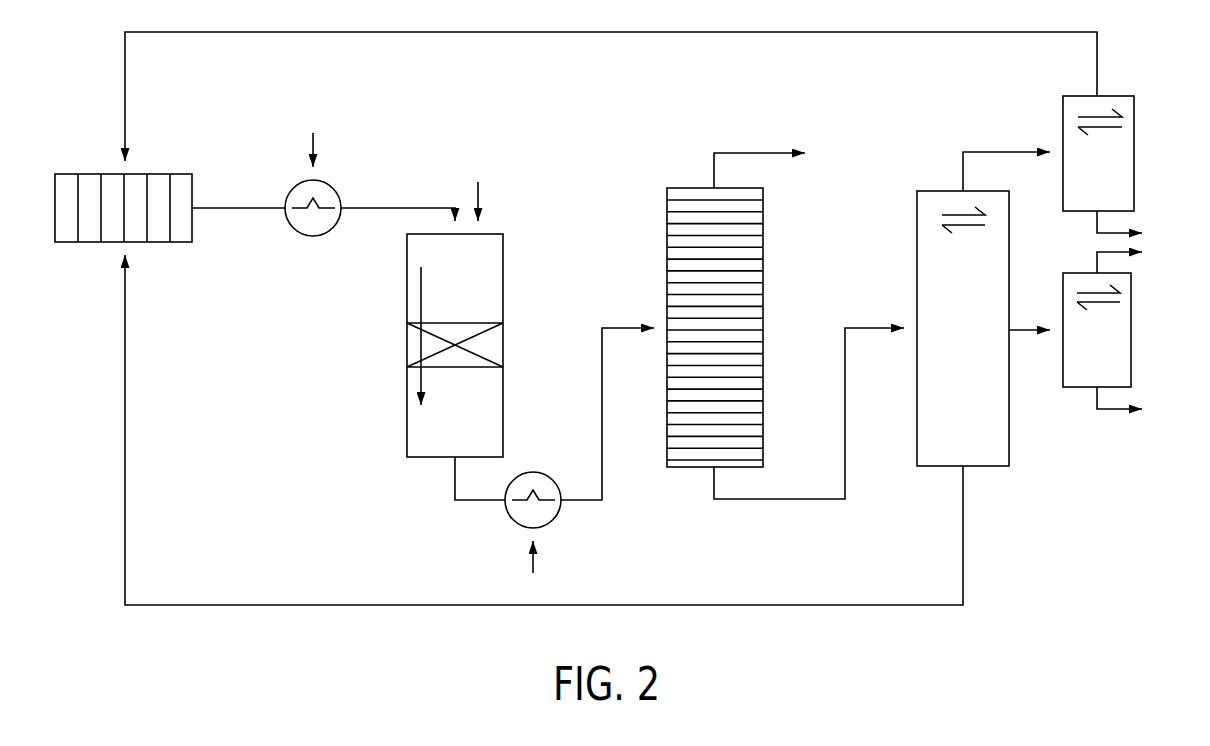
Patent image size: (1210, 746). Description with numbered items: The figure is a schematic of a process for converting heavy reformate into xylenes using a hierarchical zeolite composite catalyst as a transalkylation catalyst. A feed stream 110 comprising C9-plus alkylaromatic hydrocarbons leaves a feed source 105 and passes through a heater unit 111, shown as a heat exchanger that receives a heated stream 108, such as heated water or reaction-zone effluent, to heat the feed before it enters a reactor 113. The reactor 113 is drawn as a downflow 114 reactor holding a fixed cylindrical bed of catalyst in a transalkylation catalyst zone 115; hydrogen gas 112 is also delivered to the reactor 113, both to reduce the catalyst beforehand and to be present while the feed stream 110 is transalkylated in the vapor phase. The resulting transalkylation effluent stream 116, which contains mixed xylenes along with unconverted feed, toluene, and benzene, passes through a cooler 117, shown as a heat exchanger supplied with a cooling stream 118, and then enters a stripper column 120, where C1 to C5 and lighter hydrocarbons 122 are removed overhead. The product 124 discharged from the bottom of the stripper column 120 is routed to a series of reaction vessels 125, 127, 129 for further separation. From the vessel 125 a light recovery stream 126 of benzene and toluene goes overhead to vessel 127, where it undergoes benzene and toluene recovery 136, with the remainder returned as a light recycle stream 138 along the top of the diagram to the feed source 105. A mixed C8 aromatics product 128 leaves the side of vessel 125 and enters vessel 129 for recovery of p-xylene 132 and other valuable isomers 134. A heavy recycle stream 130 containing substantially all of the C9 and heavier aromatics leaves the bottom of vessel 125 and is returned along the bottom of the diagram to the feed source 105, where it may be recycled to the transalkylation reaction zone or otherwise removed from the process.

The feed source 105 is at (152, 173).
The heated stream 108 is at (310, 138).
The feed stream 110 is at (243, 210).
The heater unit 111 is at (340, 188).
The hydrogen gas 112 is at (480, 193).
The reactor 113 is at (394, 298).
The downflow 114 is at (421, 280).
The transalkylation catalyst zone 115 is at (503, 343).
The transalkylation effluent stream 116 is at (452, 480).
The cooler 117 is at (510, 518).
The cooling stream 118 is at (540, 563).
The stripper column 120 is at (763, 303).
The lighter hydrocarbons 122 is at (747, 152).
The product 124 is at (805, 499).
The reaction vessel 125 is at (995, 467).
The light recovery stream 126 is at (998, 152).
The reaction vessel 127 is at (1134, 152).
The mixed C8 aromatics product 128 is at (1022, 333).
The reaction vessel 129 is at (1131, 338).
The heavy recycle stream 130 is at (685, 605).
The p-xylene 132 is at (1103, 255).
The other valuable isomers 134 is at (1113, 412).
The benzene and toluene recovery 136 is at (1097, 227).
The light recycle stream 138 is at (568, 32).